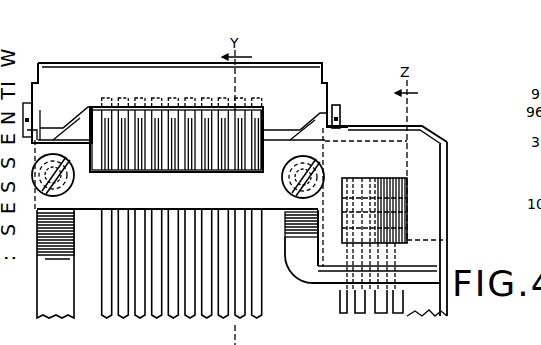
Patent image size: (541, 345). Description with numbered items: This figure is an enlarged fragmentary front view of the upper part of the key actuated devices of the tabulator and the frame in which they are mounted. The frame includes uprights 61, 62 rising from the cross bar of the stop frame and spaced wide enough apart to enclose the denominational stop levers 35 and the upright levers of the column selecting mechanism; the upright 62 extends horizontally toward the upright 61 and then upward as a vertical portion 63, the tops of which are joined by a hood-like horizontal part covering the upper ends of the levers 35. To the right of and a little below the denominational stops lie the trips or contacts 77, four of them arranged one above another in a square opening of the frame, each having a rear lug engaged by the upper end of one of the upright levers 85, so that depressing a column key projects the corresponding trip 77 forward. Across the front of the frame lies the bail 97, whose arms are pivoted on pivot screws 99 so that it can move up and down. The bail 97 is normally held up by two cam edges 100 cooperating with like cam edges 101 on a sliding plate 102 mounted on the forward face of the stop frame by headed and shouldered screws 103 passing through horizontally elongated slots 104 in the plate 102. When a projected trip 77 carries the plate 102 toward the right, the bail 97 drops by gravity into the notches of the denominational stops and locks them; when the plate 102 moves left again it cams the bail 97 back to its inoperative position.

The levers 35 is at (122, 316).
The upright 61 is at (40, 278).
The upright 62 is at (432, 318).
The vertical portion 63 is at (293, 234).
The trips or contacts 77 is at (365, 190).
The upright levers 85 is at (366, 300).
The bail 97 is at (217, 165).
The pivot screws 99 is at (336, 105).
The cam edges 100 is at (80, 122).
The cam edges 101 is at (62, 132).
The sliding plate 102 is at (362, 126).
The headed and shouldered screws 103 is at (75, 181).
The horizontally elongated slots 104 is at (33, 174).